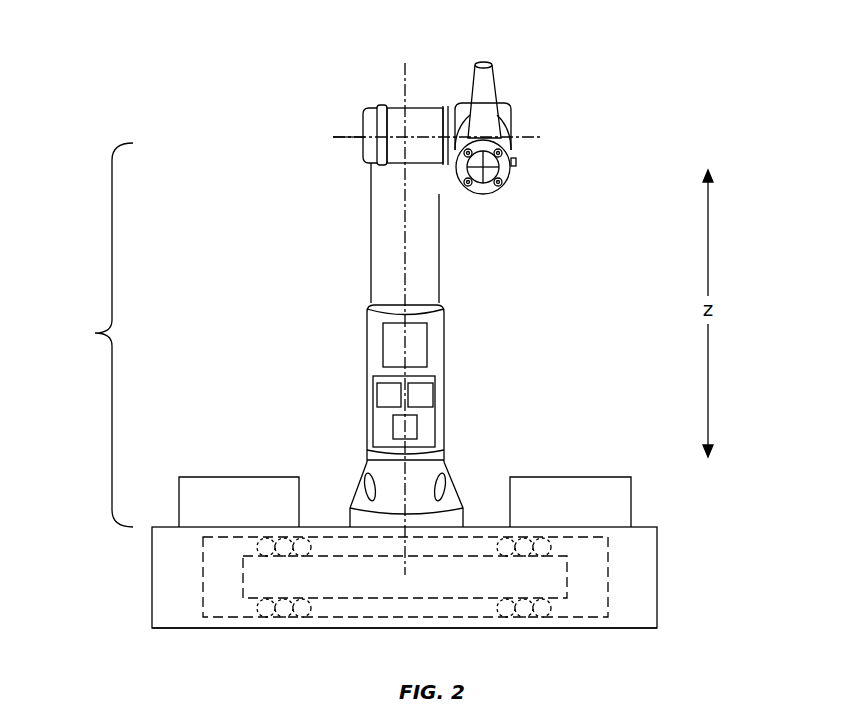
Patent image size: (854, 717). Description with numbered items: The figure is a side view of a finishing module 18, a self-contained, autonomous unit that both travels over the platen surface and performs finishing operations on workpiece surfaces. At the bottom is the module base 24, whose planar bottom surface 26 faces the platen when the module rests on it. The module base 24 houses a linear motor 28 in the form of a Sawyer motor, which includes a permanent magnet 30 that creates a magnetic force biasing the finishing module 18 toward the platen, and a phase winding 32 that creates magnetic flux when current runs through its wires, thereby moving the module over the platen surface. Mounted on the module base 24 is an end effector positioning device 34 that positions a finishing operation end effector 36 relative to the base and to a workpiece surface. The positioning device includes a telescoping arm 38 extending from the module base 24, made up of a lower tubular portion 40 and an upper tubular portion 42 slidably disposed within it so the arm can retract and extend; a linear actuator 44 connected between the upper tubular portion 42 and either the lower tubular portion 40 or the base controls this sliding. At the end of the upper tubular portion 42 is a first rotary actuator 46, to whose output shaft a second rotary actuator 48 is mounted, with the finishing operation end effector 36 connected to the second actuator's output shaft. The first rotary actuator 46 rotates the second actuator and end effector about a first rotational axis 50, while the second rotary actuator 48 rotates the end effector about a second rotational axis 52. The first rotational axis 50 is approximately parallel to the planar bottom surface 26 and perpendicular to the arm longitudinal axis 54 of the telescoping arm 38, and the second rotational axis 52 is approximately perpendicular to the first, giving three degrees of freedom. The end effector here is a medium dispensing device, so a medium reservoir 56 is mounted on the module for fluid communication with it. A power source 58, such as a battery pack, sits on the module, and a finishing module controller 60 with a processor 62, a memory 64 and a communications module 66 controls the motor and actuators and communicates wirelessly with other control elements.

The finishing module 18 is at (118, 93).
The module base 24 is at (152, 578).
The planar bottom surface 26 is at (176, 628).
The linear motor 28 is at (608, 565).
The permanent magnet 30 is at (567, 592).
The phase winding 32 is at (282, 616).
The end effector positioning device 34 is at (97, 335).
The finishing operation end effector 36 is at (487, 93).
The telescoping arm 38 is at (539, 277).
The lower tubular portion 40 is at (444, 330).
The upper tubular portion 42 is at (440, 217).
The linear actuator 44 is at (383, 345).
The first rotary actuator 46 is at (368, 112).
The second rotary actuator 48 is at (499, 153).
The first rotational axis 50 is at (348, 137).
The second rotational axis 52 is at (499, 182).
The arm longitudinal axis 54 is at (405, 236).
The medium reservoir 56 is at (570, 477).
The power source 58 is at (240, 477).
The finishing module controller 60 is at (373, 438).
The processor 62 is at (377, 397).
The memory 64 is at (433, 397).
The communications module 66 is at (417, 430).